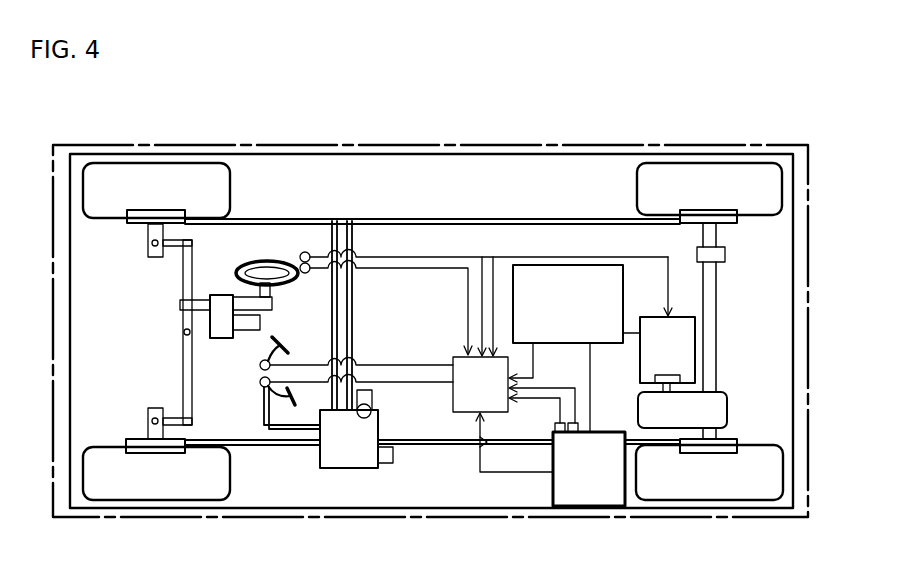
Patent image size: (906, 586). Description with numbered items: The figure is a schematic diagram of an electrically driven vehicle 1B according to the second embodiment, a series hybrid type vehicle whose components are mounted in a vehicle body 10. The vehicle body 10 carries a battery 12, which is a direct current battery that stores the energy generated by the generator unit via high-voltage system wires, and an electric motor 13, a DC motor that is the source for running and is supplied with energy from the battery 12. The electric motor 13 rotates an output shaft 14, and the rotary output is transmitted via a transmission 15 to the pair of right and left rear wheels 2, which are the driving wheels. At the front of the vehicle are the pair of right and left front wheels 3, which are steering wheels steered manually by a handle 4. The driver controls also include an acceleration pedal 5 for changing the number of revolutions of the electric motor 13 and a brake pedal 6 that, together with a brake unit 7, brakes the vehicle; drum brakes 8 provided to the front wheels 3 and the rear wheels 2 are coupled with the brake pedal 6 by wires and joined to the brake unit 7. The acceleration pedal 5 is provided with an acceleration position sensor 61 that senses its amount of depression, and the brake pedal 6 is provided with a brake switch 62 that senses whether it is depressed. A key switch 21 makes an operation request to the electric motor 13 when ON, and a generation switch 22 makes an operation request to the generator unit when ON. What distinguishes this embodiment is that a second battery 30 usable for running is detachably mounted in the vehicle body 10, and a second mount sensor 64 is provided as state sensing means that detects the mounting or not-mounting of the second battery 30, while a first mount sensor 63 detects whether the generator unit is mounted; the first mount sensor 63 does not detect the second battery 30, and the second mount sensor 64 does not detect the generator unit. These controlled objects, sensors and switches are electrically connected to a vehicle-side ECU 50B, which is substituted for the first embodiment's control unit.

The electrically driven vehicle 1B is at (93, 145).
The rear wheels 2 is at (712, 187).
The front wheels 3 is at (155, 182).
The handle 4 is at (263, 261).
The acceleration pedal 5 is at (286, 347).
The brake pedal 6 is at (294, 400).
The brake unit 7 is at (350, 458).
The drum brakes 8 is at (145, 218).
The vehicle body 10 is at (448, 153).
The battery 12 is at (556, 290).
The electric motor 13 is at (682, 330).
The output shaft 14 is at (680, 388).
The transmission 15 is at (710, 408).
The key switch 21 is at (303, 252).
The generation switch 22 is at (310, 265).
The second battery 30 is at (608, 487).
The vehicle-side ECU 50B is at (462, 408).
The acceleration position sensor 61 is at (261, 366).
The brake switch 62 is at (261, 385).
The first mount sensor 63 is at (573, 432).
The second mount sensor 64 is at (550, 445).